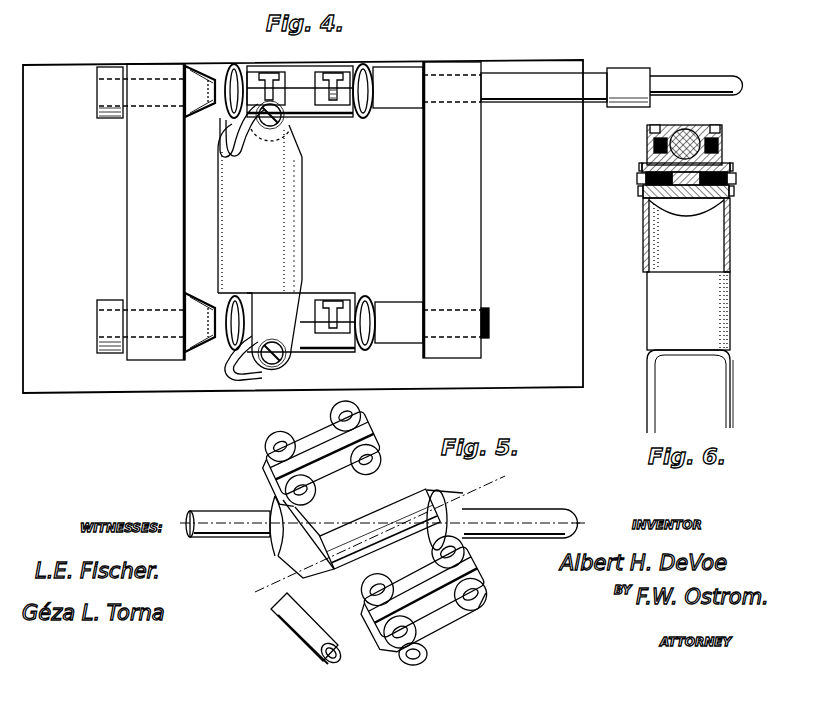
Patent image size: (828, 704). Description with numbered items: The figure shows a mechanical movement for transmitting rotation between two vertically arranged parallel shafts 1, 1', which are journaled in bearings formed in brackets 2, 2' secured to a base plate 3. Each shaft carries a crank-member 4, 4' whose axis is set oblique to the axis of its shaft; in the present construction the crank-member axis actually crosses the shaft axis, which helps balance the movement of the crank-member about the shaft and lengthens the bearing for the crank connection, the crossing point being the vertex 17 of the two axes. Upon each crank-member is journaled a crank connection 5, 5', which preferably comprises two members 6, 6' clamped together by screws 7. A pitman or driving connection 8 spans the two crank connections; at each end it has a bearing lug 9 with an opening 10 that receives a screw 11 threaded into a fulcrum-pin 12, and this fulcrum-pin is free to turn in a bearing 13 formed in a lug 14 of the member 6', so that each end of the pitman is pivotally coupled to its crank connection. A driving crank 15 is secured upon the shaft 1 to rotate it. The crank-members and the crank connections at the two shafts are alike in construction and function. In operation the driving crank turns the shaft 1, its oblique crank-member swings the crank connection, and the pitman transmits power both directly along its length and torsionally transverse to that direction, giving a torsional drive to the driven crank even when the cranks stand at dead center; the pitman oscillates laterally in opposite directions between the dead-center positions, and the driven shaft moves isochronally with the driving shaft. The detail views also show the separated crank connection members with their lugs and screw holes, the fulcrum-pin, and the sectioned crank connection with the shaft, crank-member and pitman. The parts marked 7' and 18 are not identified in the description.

In FIG. 4, the shaft 1 is at (420, 93).
In FIG. 4, the shaft 1' is at (495, 323).
In FIG. 4, the bracket 2 is at (156, 212).
In FIG. 4, the bracket 2' is at (452, 210).
In FIG. 4, the plate 3 is at (303, 226).
In FIG. 6, the crank-member 4 is at (689, 130).
In FIG. 5, the crank-member 4' is at (345, 521).
In FIG. 4, the crank connection 5 is at (279, 79).
In FIG. 4, the crank connection 5' is at (289, 315).
In FIG. 4, the member of crank connection 6 is at (332, 73).
In FIG. 6, the member of crank connection 6 is at (688, 267).
In FIG. 5, the member of crank connection 6 is at (319, 454).
In FIG. 4, the member of crank connection 6' is at (296, 104).
In FIG. 6, the member of crank connection 6' is at (735, 150).
In FIG. 5, the member of crank connection 6' is at (420, 593).
In FIG. 4, the screw 7 is at (337, 303).
In FIG. 6, the screw 7 is at (689, 128).
In FIG. 5, the shaft 7' is at (523, 513).
In FIG. 4, the pitman 8 is at (260, 247).
In FIG. 4, the bearing lug 9 is at (288, 357).
In FIG. 6, the bearing lug 9 is at (642, 164).
In FIG. 6, the opening 10 is at (638, 190).
In FIG. 4, the screw 11 is at (284, 118).
In FIG. 6, the screw 11 is at (637, 177).
In FIG. 6, the fulcrum-pin 12 is at (672, 199).
In FIG. 5, the fulcrum-pin 12 is at (312, 618).
In FIG. 6, the bearing 13 is at (696, 199).
In FIG. 5, the bearing 13 is at (428, 655).
In FIG. 4, the lug 14 is at (226, 129).
In FIG. 6, the lug 14 is at (650, 198).
In FIG. 5, the lug 14 is at (378, 645).
In FIG. 4, the driving crank 15 is at (663, 84).
In FIG. 5, the vertex 17 is at (398, 521).
In FIG. 5, the socket 18 is at (323, 547).